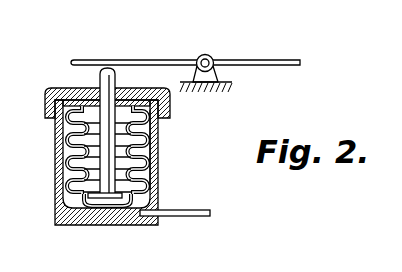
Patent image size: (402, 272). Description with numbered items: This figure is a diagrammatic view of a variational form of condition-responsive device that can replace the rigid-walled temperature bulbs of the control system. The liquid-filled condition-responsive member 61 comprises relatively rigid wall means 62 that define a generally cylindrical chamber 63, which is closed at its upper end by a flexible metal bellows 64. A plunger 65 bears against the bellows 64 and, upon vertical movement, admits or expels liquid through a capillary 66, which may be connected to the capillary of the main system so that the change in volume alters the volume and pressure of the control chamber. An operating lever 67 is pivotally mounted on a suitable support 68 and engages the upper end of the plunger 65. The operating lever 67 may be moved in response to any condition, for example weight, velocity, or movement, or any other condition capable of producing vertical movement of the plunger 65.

The liquid-filled condition-responsive member 61 is at (158, 143).
The rigid wall means 62 is at (158, 168).
The cylindrical chamber 63 is at (70, 163).
The flexible metal bellows 64 is at (78, 149).
The plunger 65 is at (104, 68).
The capillary 66 is at (190, 211).
The operating lever 67 is at (157, 60).
The support 68 is at (208, 55).